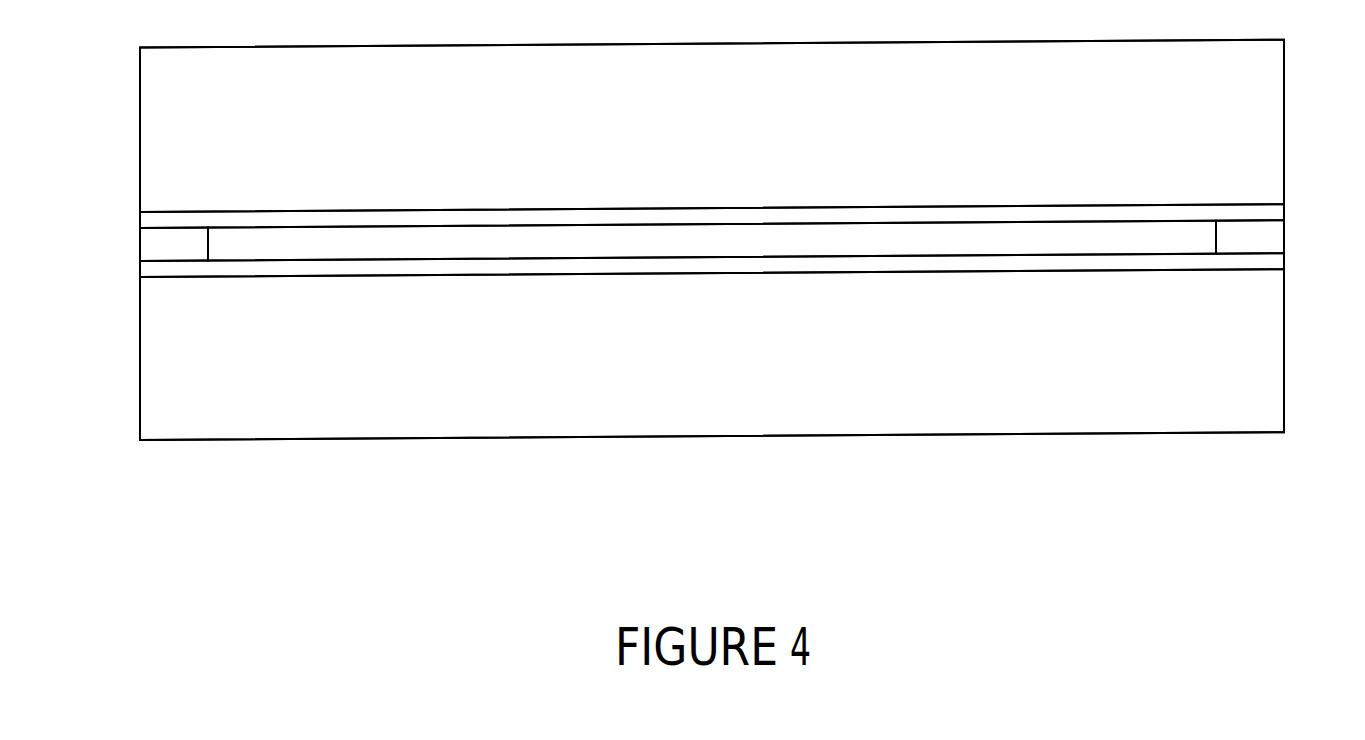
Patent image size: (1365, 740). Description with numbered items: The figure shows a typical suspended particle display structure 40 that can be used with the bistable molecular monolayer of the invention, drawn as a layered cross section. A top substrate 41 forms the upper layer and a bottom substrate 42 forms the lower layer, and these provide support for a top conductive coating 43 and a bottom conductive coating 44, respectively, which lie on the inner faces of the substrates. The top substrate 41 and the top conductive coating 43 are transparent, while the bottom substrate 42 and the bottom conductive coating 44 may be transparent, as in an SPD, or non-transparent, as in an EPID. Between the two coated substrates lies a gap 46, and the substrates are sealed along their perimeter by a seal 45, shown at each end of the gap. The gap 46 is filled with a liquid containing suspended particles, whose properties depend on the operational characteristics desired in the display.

The suspended particle display structure 40 is at (138, 40).
The top substrate 41 is at (728, 139).
The bottom substrate 42 is at (728, 369).
The top conductive coating 43 is at (1288, 211).
The bottom conductive coating 44 is at (1288, 261).
The seal 45 is at (185, 255).
The gap 46 is at (728, 254).